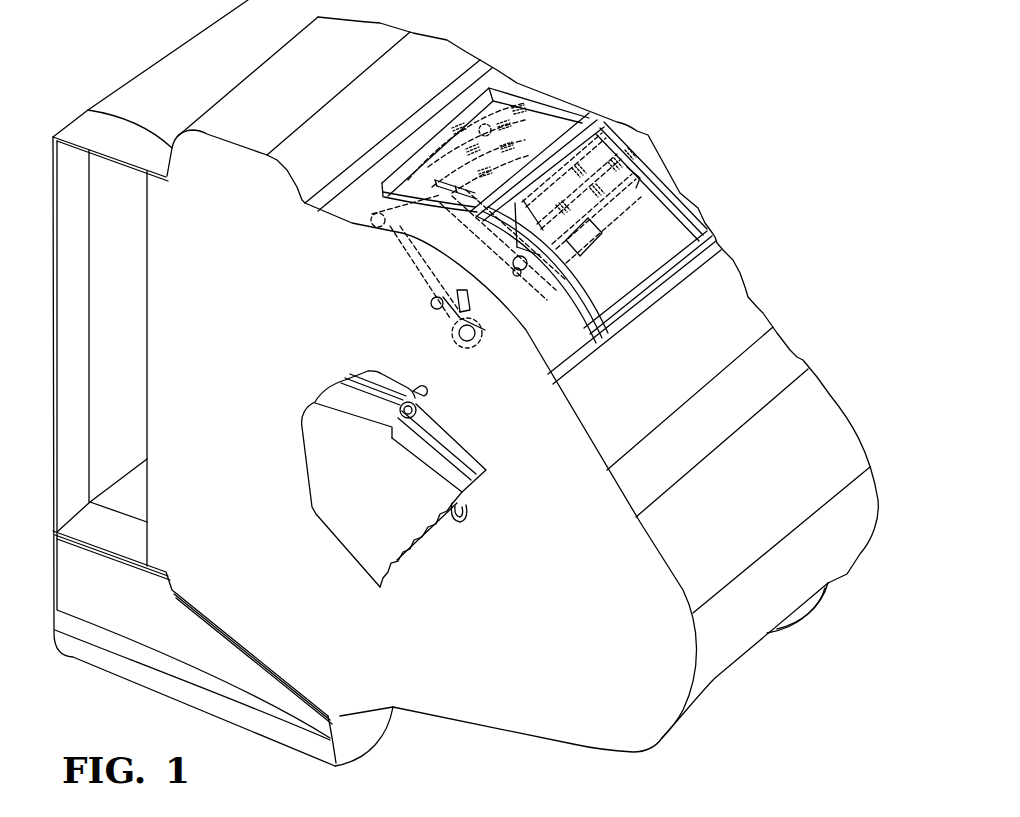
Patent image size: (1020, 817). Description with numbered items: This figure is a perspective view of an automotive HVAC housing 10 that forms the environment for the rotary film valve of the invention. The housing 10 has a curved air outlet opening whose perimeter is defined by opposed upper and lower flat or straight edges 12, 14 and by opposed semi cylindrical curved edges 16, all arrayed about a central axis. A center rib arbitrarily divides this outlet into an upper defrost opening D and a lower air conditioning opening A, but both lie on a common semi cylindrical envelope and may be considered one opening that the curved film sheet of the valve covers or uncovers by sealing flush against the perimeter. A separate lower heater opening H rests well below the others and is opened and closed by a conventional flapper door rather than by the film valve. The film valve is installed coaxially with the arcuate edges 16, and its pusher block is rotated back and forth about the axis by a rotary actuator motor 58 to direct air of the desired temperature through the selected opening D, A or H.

The HVAC housing 10 is at (124, 85).
The upper straight edge 12 is at (442, 140).
The lower straight edge 14 is at (676, 218).
The semi cylindrical curved edges 16 is at (528, 96).
The rotary actuator motor 58 is at (337, 534).
The defrost opening D is at (527, 127).
The air conditioning opening A is at (635, 289).
The heater opening H is at (798, 622).